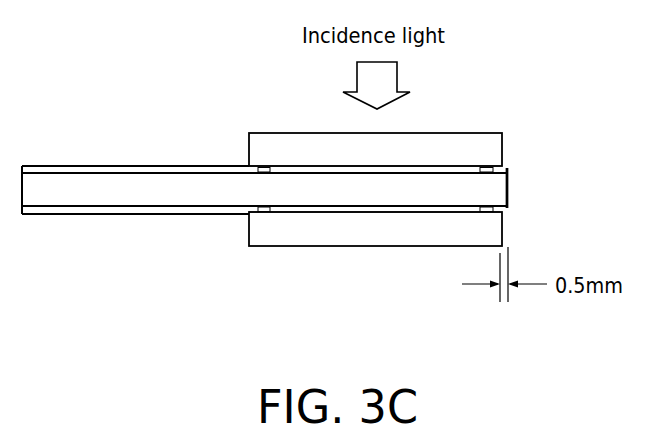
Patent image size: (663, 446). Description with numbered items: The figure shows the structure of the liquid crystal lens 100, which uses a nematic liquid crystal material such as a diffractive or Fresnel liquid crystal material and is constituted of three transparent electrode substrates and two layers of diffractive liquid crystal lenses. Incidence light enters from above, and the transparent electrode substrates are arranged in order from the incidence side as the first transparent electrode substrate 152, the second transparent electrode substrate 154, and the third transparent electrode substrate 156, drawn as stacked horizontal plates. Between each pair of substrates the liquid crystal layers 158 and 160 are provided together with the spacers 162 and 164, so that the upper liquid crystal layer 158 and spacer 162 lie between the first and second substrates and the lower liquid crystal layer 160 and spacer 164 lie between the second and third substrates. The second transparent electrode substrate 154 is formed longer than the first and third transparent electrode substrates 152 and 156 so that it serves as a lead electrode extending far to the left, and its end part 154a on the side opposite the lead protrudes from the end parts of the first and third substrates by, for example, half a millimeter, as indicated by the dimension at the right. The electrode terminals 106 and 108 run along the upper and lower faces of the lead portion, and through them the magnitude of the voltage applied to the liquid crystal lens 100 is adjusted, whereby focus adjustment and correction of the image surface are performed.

The liquid crystal lens 100 is at (362, 337).
The electrode terminal 106 is at (77, 173).
The electrode terminal 108 is at (52, 216).
The first transparent electrode substrate 152 is at (492, 143).
The second transparent electrode substrate 154 is at (492, 192).
The end part 154a is at (520, 170).
The third transparent electrode substrate 156 is at (492, 226).
The liquid crystal layer 158 is at (283, 173).
The liquid crystal layer 160 is at (413, 208).
The spacer 162 is at (258, 169).
The spacer 164 is at (258, 210).